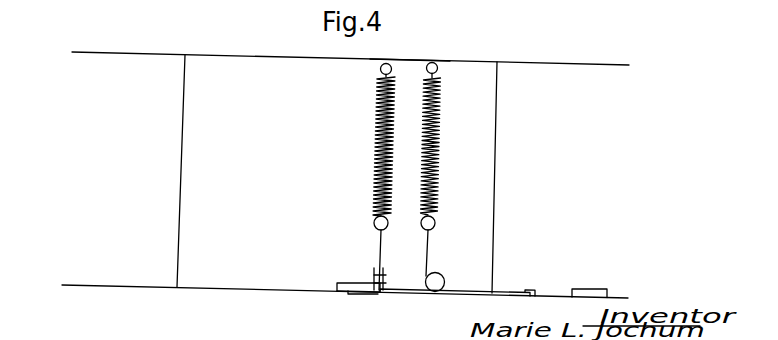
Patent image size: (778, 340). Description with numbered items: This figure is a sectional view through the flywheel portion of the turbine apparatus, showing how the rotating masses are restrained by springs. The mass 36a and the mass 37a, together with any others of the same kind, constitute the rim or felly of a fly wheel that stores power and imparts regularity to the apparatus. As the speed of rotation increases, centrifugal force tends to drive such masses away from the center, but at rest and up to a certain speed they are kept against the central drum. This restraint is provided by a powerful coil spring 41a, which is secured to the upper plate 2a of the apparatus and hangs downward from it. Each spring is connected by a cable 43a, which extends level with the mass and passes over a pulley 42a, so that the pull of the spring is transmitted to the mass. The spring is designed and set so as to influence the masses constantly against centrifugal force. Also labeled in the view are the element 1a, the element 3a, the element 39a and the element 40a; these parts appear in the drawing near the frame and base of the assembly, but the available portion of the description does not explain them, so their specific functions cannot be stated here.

The frame 1a is at (497, 146).
The upper plate 2a is at (410, 49).
The base plate 3a is at (448, 295).
The mass 36a is at (590, 272).
The mass 37a is at (347, 283).
The plate end 39a is at (527, 296).
The support 40a is at (360, 293).
The coil spring 41a is at (377, 104).
The pulley 42a is at (385, 278).
The cable 43a is at (378, 247).